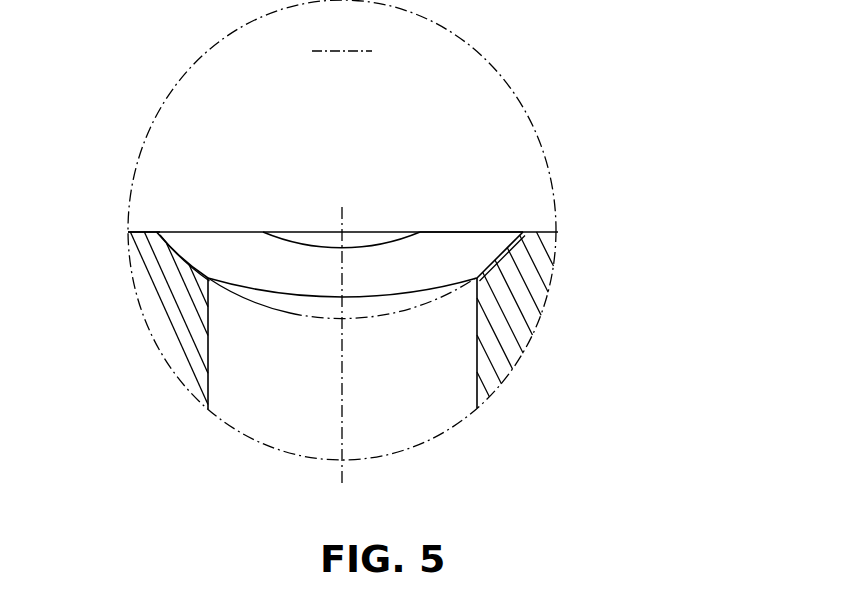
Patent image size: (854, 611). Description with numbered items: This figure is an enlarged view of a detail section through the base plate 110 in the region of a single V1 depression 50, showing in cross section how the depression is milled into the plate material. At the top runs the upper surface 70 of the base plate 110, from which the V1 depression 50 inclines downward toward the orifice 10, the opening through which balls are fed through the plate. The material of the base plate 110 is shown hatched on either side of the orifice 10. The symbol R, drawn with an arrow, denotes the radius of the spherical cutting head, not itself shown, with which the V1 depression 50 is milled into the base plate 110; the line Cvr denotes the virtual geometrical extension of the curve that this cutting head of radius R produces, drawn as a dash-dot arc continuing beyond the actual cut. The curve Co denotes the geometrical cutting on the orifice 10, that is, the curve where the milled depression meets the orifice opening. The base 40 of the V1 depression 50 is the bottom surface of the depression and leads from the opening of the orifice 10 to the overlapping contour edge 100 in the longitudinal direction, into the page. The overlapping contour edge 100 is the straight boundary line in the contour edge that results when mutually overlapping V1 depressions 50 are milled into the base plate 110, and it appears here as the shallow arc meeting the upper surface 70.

The orifice 10 is at (270, 427).
The base of the V1 depression 40 is at (333, 297).
The V1 depression 50 is at (440, 253).
The upper surface of the base plate 70 is at (143, 232).
The overlapping contour edge 100 is at (393, 238).
The base plate 110 is at (515, 308).
The radius of the spherical cutting head R is at (342, 56).
The geometrical cutting on the orifice Co is at (362, 296).
The virtual geometrical extension of the cutting-head curve Cvr is at (400, 312).